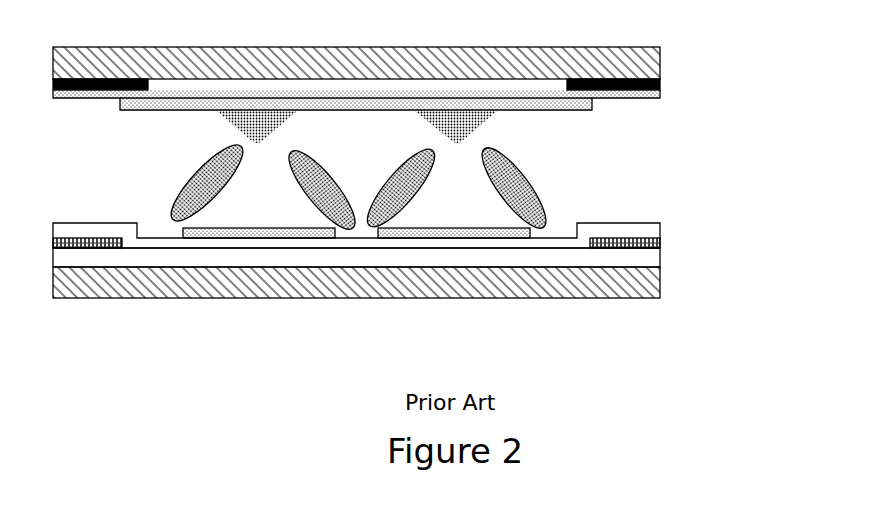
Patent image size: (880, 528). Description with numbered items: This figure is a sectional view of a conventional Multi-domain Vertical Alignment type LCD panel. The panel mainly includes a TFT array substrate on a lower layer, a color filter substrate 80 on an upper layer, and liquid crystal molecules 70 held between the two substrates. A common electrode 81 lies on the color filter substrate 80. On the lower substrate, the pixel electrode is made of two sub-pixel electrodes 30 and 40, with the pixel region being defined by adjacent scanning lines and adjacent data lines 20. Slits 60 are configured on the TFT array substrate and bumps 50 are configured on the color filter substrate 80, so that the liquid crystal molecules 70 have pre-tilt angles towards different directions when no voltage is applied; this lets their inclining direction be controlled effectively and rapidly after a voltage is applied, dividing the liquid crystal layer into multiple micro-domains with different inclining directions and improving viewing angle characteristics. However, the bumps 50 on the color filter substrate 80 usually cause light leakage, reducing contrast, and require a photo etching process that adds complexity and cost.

The data line 20 is at (662, 243).
The sub-pixel electrode 30 is at (222, 241).
The sub-pixel electrode 40 is at (440, 236).
The bump 50 is at (480, 127).
The slit 60 is at (356, 234).
The liquid crystal molecules 70 is at (522, 185).
The color filter substrate 80 is at (660, 63).
The common electrode 81 is at (662, 90).